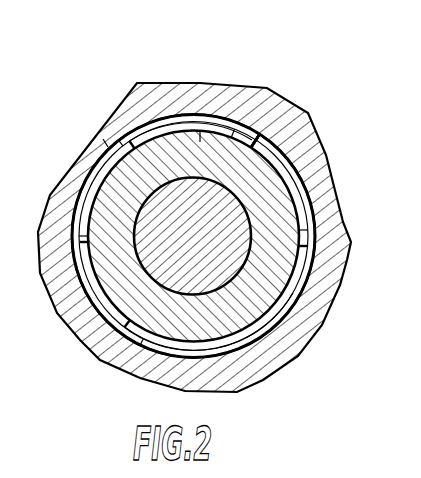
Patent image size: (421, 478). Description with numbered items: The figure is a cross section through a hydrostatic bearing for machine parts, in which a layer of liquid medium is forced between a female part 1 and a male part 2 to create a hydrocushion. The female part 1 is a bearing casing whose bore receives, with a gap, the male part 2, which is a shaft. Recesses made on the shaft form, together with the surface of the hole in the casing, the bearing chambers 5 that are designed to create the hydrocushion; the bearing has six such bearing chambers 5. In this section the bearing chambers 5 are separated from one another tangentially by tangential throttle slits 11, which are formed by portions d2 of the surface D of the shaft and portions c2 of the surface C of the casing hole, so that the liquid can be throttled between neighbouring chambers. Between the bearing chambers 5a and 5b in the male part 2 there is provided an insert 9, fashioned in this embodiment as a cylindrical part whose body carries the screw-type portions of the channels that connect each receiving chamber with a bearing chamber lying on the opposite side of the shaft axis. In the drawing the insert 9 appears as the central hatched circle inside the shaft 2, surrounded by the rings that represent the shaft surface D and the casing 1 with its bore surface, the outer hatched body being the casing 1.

The female part 1 is at (343, 238).
The male part 2 is at (262, 186).
The bearing chambers 5 is at (312, 210).
The bearing chamber 5a is at (168, 128).
The bearing chamber 5b is at (163, 338).
The insert 9 is at (238, 223).
The tangential throttle slits 11 is at (263, 123).
The surface D is at (103, 143).
The portion c2 of surface C c2 is at (206, 150).
The portion d2 of surface D d2 is at (266, 140).